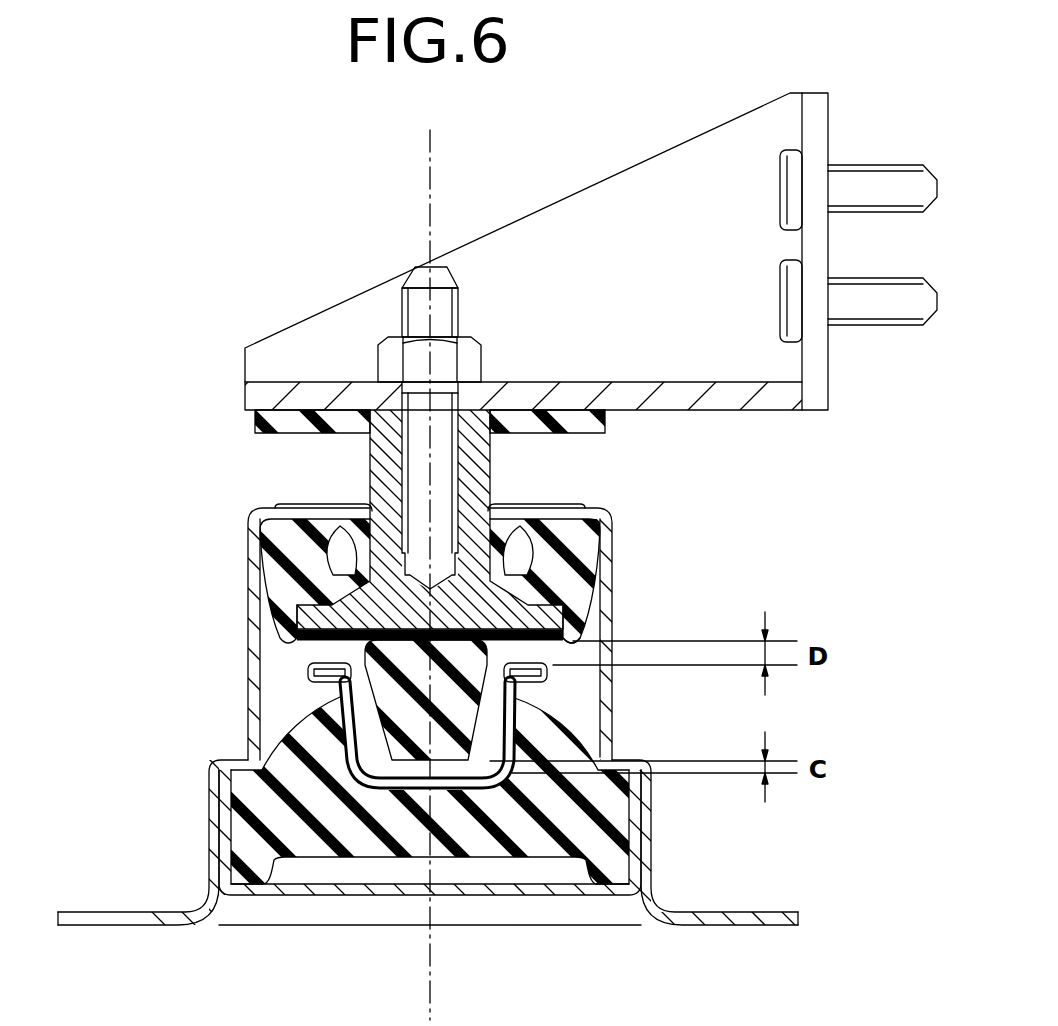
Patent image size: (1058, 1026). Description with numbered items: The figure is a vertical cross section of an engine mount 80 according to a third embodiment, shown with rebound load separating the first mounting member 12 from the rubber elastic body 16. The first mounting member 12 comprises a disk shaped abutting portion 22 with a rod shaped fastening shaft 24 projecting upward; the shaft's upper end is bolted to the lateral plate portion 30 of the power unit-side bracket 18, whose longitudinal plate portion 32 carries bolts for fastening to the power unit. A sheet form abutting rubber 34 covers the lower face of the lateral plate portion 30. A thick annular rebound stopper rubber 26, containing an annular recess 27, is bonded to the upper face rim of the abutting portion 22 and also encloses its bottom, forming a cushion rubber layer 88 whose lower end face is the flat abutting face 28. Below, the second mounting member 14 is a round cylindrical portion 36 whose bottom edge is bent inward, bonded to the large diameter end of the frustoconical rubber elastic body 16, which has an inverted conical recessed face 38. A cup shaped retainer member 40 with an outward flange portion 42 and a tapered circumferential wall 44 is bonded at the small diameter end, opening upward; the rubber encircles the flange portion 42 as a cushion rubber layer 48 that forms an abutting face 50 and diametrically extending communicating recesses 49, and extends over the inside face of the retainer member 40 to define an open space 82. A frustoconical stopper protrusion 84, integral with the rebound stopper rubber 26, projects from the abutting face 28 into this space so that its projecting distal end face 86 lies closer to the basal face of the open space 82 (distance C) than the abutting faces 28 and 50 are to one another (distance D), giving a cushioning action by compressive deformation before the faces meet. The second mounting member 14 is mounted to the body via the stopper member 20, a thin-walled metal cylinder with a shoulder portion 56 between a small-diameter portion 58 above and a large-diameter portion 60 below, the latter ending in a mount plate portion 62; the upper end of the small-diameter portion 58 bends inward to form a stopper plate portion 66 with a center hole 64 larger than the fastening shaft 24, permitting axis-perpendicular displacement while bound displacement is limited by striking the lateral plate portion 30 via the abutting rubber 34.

The first mounting member 12 is at (508, 465).
The second mounting member 14 is at (428, 842).
The rubber elastic body 16 is at (475, 823).
The power unit-side bracket 18 is at (529, 513).
The stopper member 20 is at (379, 616).
The abutting portion 22 is at (529, 513).
The fastening shaft 24 is at (392, 462).
The rebound stopper rubber 26 is at (529, 513).
The annular recess 27 is at (537, 540).
The abutting face 28 is at (573, 641).
The lateral plate portion 30 is at (762, 400).
The longitudinal plate portion 32 is at (812, 388).
The abutting rubber 34 is at (262, 421).
The cylindrical portion 36 is at (388, 818).
The inverted conical recessed face 38 is at (529, 513).
The retainer member 40 is at (529, 513).
The flange portion 42 is at (406, 716).
The tapered circumferential wall 44 is at (567, 812).
The cushion rubber layer 48 is at (312, 664).
The communicating recesses 49 is at (547, 672).
The abutting face 50 is at (352, 660).
The shoulder portion 56 is at (240, 763).
The small-diameter portion 58 is at (250, 582).
The large-diameter portion 60 is at (213, 866).
The mount plate portion 62 is at (77, 918).
The center hole 64 is at (345, 508).
The stopper plate portion 66 is at (560, 510).
The engine mount 80 is at (193, 505).
The open space 82 is at (322, 706).
The stopper protrusion 84 is at (445, 745).
The projecting distal end face 86 is at (422, 765).
The cushion rubber layer 88 is at (320, 630).